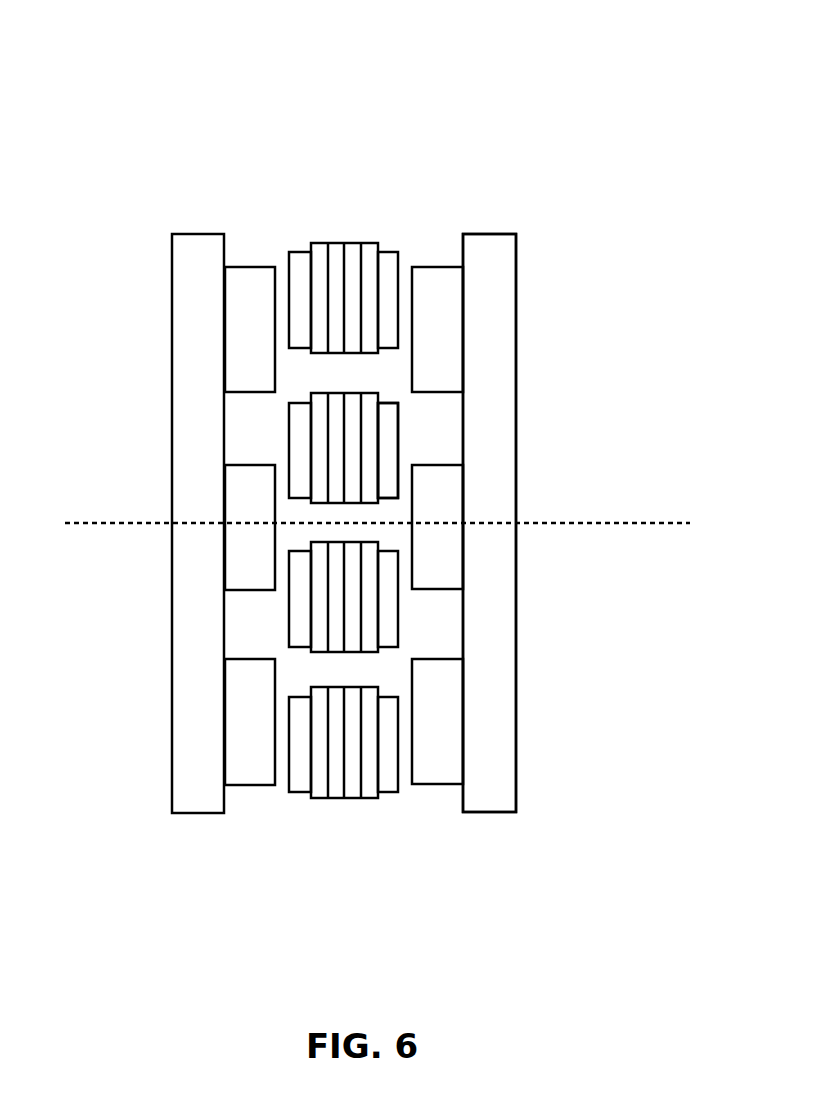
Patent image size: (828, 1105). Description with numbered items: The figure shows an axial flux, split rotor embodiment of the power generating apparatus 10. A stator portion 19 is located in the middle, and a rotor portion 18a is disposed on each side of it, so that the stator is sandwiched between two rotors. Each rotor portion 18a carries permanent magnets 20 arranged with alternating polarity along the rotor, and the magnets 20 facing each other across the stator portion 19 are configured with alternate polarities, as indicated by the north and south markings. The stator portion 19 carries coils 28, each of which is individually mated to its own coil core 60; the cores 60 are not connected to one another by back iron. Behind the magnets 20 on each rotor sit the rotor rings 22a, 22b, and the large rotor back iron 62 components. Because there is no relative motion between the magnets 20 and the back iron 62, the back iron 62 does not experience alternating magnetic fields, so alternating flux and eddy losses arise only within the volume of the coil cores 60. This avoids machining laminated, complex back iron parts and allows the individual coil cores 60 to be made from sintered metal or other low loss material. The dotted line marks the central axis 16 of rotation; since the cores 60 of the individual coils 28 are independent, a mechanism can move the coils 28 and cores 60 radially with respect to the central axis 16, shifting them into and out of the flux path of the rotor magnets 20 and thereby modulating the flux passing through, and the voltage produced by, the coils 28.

The power generating apparatus 10 is at (394, 88).
The central axis of rotation 16 is at (383, 509).
The rotor portion 18a is at (406, 472).
The stator portion 19 is at (464, 478).
The permanent magnets 20 is at (442, 676).
The first back iron plate 22a is at (190, 262).
The second back iron plate 22b is at (517, 268).
The coils 28 is at (350, 427).
The coil cores 60 is at (393, 478).
The rotor back iron 62 is at (480, 737).